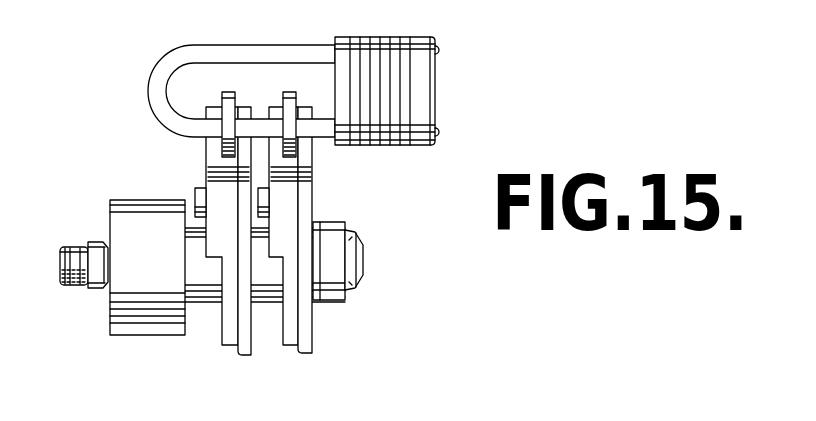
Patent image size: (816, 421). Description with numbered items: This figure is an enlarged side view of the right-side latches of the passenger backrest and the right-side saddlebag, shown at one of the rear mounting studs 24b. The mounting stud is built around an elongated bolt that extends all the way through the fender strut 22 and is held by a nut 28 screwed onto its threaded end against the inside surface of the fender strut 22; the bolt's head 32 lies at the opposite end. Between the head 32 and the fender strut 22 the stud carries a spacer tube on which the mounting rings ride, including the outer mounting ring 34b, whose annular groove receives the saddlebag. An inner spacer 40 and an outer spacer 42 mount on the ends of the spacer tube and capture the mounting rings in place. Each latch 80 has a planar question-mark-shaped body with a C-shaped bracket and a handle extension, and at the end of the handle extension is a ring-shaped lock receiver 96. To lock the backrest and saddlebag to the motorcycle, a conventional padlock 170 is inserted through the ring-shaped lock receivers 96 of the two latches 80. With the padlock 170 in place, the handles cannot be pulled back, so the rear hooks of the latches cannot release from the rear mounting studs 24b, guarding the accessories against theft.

The padlock 170 is at (428, 90).
The ring-shaped lock receiver 96 is at (291, 91).
The fender strut 22 is at (137, 210).
The inner spacer 40 is at (200, 260).
The nut 28 is at (102, 289).
The outer mounting ring 34b is at (313, 227).
The latch 80 is at (300, 354).
The head 32 is at (359, 233).
The outer spacer 42 is at (335, 301).
The rear mounting stud 24b is at (363, 285).